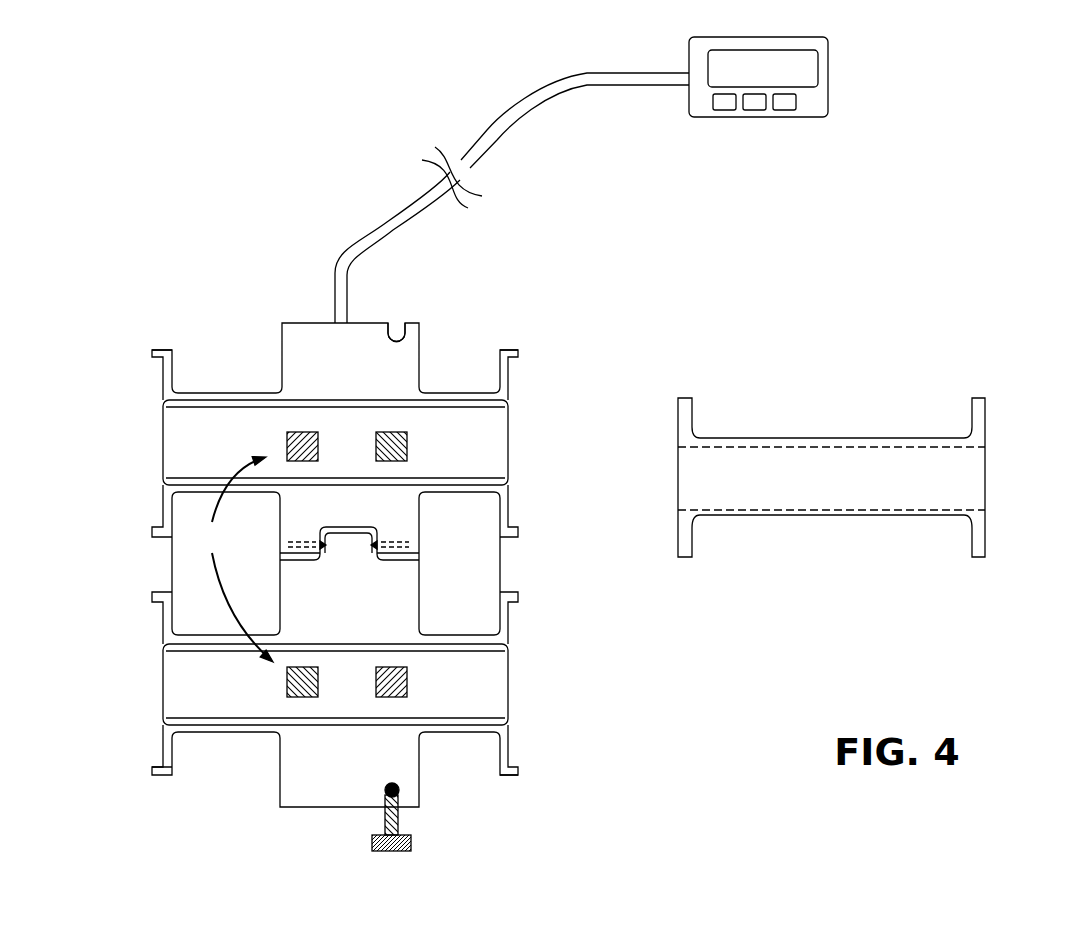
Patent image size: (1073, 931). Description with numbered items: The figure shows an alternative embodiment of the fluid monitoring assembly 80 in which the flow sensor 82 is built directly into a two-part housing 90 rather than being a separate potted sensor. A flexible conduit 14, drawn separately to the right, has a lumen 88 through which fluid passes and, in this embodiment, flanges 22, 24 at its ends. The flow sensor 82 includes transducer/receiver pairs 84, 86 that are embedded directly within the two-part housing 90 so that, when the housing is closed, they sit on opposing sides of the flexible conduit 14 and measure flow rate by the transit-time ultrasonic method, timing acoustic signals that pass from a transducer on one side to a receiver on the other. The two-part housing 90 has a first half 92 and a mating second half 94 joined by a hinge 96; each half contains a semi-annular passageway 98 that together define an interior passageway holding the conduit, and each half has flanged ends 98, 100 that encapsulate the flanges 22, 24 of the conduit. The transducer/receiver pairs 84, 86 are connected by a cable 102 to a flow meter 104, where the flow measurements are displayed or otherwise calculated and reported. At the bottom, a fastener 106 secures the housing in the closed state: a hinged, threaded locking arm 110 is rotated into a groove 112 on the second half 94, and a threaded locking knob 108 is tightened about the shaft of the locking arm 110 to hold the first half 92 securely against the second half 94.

The flexible conduit 14 is at (880, 440).
The flange 22 is at (677, 413).
The flange 24 is at (980, 537).
The fluid monitoring assembly 80 is at (113, 311).
The flow sensor 82 is at (233, 559).
The transducer/receiver pair 84 is at (287, 437).
The transducer/receiver pair 86 is at (407, 437).
The lumen 88 is at (957, 472).
The two-part housing 90 is at (446, 326).
The first half 92 is at (453, 633).
The second half 94 is at (433, 493).
The hinge 96 is at (347, 545).
The semi-annular passageway 98 is at (172, 350).
The flanged end 100 is at (518, 350).
The cable 102 is at (383, 226).
The flow meter 104 is at (797, 36).
The fastener 106 is at (385, 862).
The locking knob 108 is at (397, 851).
The locking arm 110 is at (398, 818).
The groove 112 is at (397, 327).